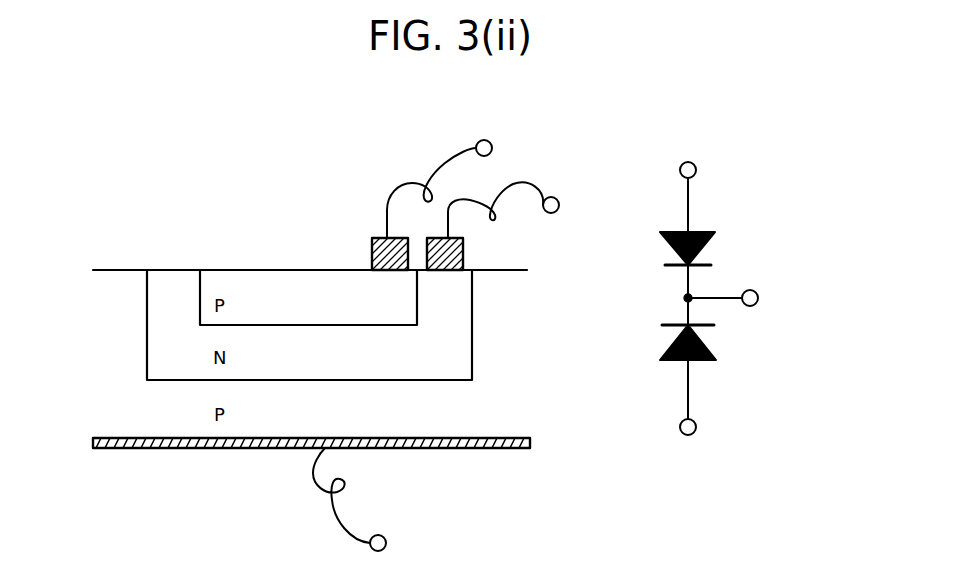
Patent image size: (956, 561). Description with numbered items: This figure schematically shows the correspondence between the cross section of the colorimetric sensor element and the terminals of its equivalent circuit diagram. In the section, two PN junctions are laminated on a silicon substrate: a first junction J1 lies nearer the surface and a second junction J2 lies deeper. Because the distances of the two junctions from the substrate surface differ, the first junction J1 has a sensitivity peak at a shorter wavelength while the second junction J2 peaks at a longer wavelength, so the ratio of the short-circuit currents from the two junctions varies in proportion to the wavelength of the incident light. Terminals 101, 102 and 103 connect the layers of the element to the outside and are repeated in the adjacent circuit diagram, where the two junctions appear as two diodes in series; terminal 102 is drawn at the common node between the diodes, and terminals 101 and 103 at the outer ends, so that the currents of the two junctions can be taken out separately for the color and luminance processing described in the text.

The first electrode terminal 101 is at (492, 147).
The second electrode terminal 102 is at (559, 204).
The third electrode terminal (substrate electrode) 103 is at (386, 543).
The first junction J1 is at (259, 290).
The second junction J2 is at (292, 338).